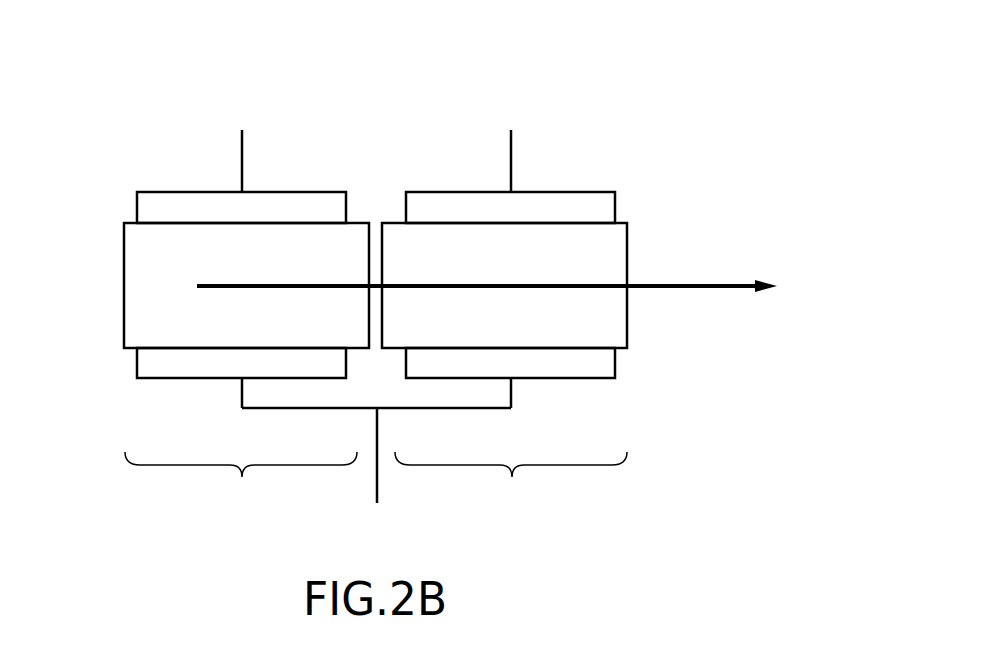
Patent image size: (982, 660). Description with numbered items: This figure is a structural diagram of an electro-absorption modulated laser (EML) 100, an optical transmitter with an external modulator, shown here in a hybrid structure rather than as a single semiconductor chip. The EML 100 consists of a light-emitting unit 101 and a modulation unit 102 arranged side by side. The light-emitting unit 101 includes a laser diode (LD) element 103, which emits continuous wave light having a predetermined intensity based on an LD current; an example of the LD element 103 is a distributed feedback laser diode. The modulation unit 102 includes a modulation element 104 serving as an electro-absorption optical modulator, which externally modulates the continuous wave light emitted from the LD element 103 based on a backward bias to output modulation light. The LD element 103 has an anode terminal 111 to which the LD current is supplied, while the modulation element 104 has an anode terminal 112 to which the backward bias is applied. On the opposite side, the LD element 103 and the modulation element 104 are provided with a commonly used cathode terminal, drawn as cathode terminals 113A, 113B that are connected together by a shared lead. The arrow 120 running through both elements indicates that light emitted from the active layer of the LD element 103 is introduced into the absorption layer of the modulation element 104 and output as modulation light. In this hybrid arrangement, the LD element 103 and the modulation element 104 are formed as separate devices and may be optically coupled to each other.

The electro-absorption modulated laser 100 is at (656, 94).
The light-emitting unit 101 is at (241, 481).
The modulation unit 102 is at (511, 481).
The laser diode element 103 is at (135, 253).
The modulation element 104 is at (622, 250).
The anode terminal 111 is at (198, 200).
The anode terminal 112 is at (552, 200).
The cathode terminal 113A is at (137, 360).
The cathode terminal 113B is at (615, 360).
The arrow 120 is at (713, 310).